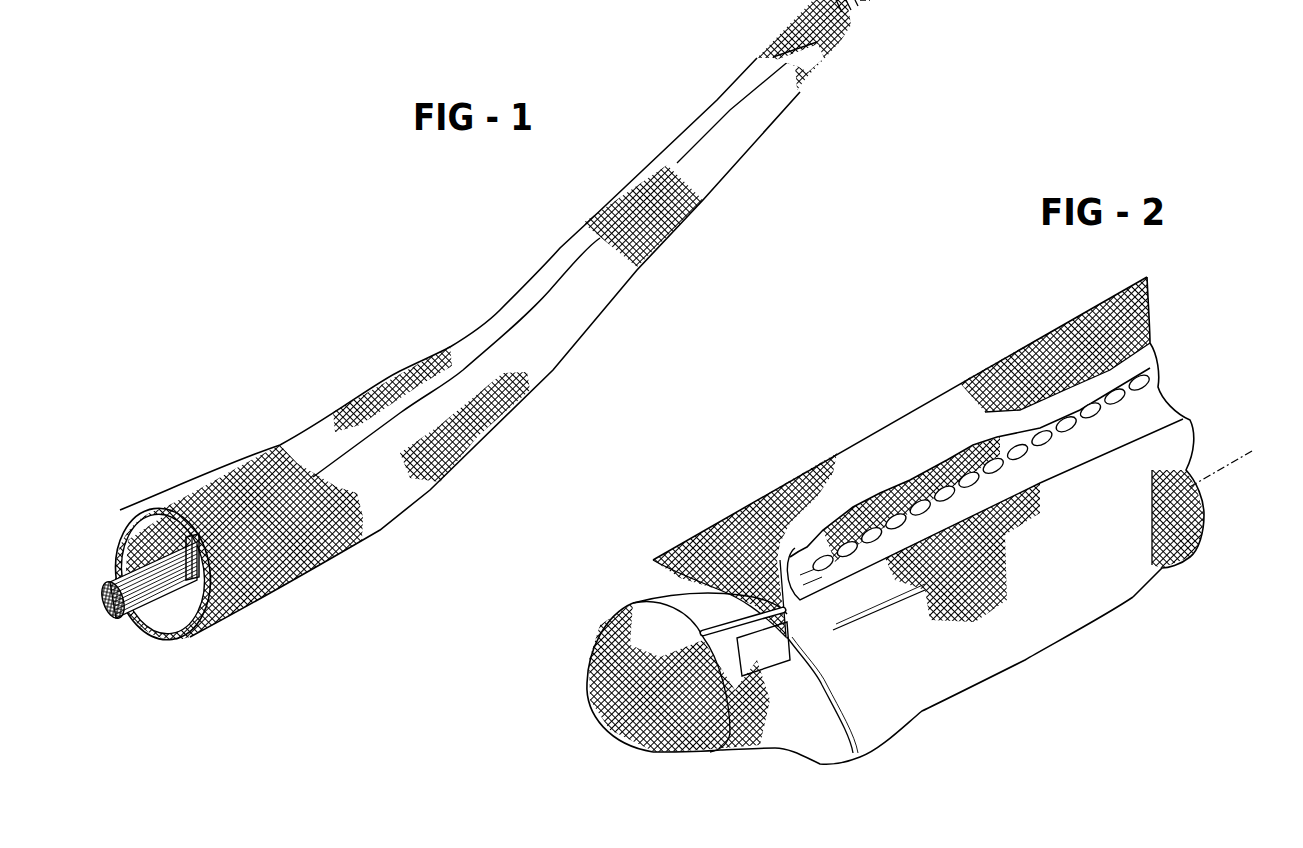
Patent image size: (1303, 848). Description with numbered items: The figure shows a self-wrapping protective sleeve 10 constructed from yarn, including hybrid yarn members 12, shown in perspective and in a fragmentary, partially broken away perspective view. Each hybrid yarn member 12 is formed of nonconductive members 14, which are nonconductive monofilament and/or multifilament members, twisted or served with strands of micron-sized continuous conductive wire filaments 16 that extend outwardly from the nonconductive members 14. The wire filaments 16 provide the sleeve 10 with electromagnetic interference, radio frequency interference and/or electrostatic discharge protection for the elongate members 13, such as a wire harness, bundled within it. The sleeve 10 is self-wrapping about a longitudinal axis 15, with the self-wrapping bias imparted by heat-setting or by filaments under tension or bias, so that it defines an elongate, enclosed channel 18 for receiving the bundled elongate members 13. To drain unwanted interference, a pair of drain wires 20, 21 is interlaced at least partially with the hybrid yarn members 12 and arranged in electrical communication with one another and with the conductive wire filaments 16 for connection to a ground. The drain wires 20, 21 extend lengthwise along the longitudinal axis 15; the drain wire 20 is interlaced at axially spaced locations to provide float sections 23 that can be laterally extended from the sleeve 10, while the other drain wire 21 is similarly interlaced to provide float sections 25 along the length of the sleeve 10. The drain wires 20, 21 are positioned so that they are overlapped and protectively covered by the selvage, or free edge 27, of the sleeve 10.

In FIG. 1, the sleeve 10 is at (318, 279).
In FIG. 2, the sleeve 10 is at (852, 366).
In FIG. 1, the hybrid yarn members 12 is at (622, 294).
In FIG. 2, the hybrid yarn members 12 is at (611, 734).
In FIG. 1, the elongate members 13 is at (118, 610).
In FIG. 1, the nonconductive members 14 is at (260, 587).
In FIG. 1, the longitudinal axis 15 is at (877, 0).
In FIG. 2, the longitudinal axis 15 is at (1228, 445).
In FIG. 1, the wire filaments 16 is at (477, 433).
In FIG. 1, the channel 18 is at (187, 623).
In FIG. 2, the channel 18 is at (808, 722).
In FIG. 1, the drain wire 20 is at (162, 600).
In FIG. 2, the drain wire 20 is at (703, 640).
In FIG. 1, the drain wire 21 is at (177, 600).
In FIG. 2, the drain wire 21 is at (737, 665).
In FIG. 2, the float sections 23 is at (975, 468).
In FIG. 2, the float sections 25 is at (1047, 440).
In FIG. 2, the free edge 27 is at (727, 513).